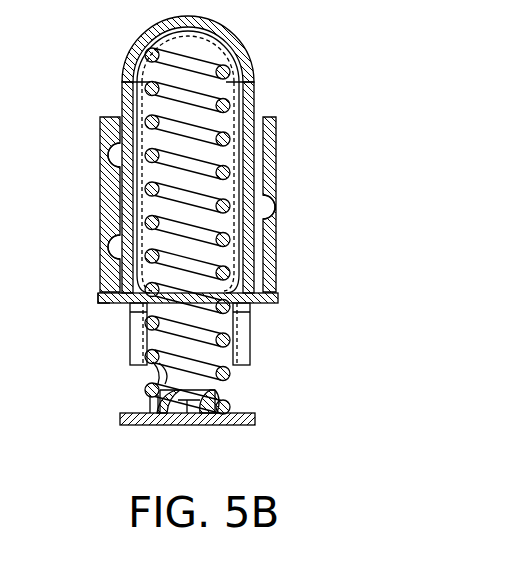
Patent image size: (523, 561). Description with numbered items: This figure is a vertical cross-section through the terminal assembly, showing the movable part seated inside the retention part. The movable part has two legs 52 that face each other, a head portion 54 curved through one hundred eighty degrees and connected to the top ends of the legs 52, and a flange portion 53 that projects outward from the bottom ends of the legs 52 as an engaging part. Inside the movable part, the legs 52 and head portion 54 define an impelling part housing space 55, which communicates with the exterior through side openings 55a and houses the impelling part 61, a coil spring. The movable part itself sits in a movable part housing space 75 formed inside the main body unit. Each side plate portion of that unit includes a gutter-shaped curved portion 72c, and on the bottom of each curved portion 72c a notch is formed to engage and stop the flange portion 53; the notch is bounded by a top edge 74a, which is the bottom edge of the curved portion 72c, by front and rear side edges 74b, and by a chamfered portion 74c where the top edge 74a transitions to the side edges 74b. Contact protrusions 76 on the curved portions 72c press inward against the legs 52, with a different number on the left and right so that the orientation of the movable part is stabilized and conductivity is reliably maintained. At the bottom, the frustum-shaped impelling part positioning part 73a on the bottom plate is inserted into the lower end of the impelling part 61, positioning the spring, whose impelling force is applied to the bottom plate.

The head portion 54 is at (233, 40).
The legs 52 is at (256, 88).
The impelling part housing space 55 is at (140, 106).
The side openings 55a is at (168, 78).
The movable part housing space 75 is at (266, 117).
The curved portion 72c is at (276, 140).
The contact protrusion 76 is at (110, 158).
The flange portion 53 is at (278, 298).
The top edge 74a is at (100, 291).
The side edges 74b is at (130, 350).
The chamfered portion 74c is at (130, 313).
The impelling part 61 is at (240, 358).
The impelling part positioning part 73a is at (212, 392).